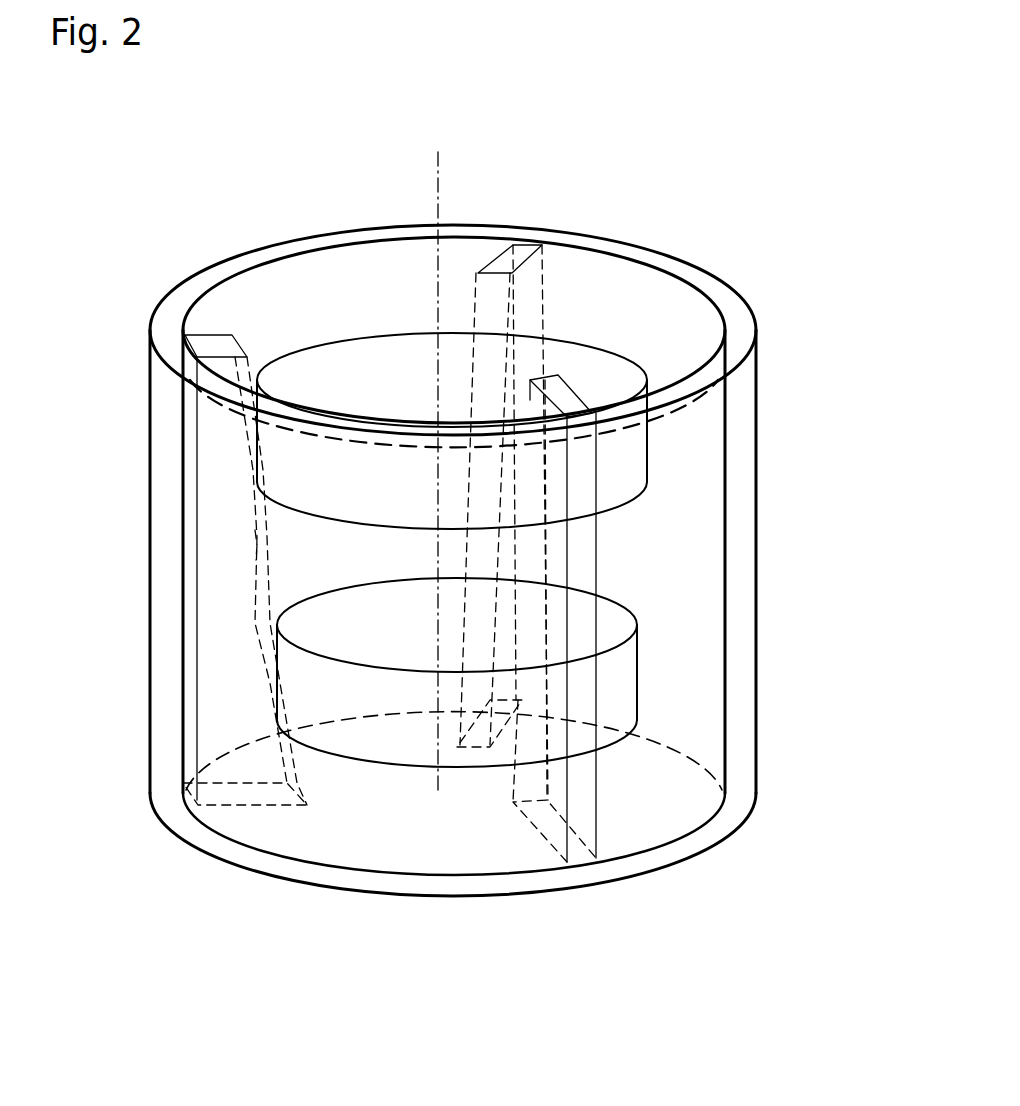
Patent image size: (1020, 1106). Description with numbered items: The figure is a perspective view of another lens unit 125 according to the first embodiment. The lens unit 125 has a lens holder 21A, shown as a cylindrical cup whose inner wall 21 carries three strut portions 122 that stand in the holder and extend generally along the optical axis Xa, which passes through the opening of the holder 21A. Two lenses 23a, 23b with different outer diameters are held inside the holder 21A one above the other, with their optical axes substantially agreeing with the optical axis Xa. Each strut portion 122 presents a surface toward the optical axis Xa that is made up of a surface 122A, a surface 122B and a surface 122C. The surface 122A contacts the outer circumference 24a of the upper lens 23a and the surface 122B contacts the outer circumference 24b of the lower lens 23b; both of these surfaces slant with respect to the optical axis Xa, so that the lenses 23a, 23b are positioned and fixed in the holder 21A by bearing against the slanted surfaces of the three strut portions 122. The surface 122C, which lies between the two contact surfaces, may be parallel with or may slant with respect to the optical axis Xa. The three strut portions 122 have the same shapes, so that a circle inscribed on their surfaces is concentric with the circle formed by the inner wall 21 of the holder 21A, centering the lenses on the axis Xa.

The lens unit 125 is at (596, 213).
The optical axis Xa is at (437, 200).
The inner wall 21 is at (607, 300).
The lens holder 21A is at (705, 283).
The lens 23a is at (605, 388).
The outer circumference 24a is at (302, 458).
The lens 23b is at (610, 628).
The outer circumference 24b is at (303, 673).
The strut portion 122 is at (528, 290).
The surface 122A is at (490, 357).
The surface 122B is at (273, 685).
The surface 122C is at (257, 548).